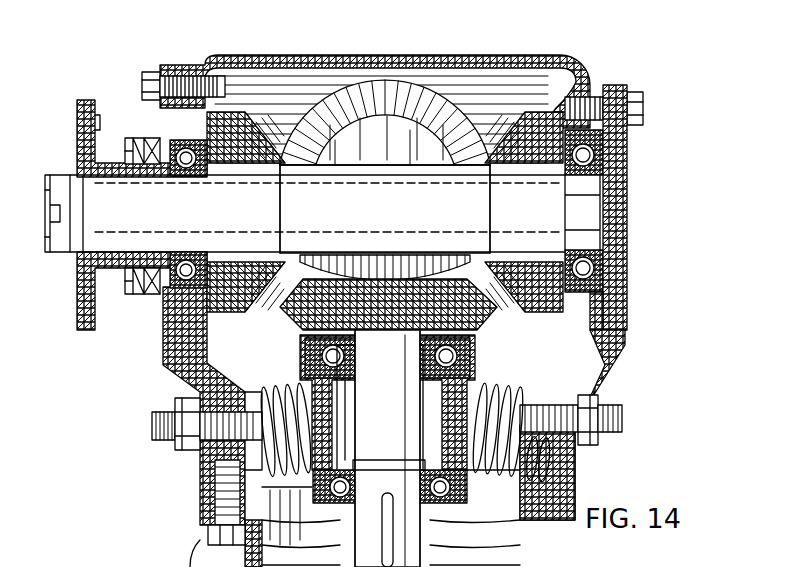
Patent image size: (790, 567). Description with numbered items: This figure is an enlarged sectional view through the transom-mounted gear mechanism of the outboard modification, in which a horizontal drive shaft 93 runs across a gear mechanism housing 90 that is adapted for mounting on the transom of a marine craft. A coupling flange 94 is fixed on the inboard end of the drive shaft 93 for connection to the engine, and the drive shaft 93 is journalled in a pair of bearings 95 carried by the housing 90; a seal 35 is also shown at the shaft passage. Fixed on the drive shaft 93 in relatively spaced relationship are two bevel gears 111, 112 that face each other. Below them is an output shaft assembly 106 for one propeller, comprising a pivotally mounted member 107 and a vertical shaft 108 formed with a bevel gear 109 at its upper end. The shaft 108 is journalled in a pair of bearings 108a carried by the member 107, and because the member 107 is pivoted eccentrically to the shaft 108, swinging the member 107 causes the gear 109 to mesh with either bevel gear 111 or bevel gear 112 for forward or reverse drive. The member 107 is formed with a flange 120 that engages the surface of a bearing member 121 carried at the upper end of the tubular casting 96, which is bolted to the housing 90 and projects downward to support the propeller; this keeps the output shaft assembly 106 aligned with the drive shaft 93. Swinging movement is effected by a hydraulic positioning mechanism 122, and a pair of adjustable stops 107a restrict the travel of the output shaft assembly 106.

The gear mechanism housing 90 is at (552, 52).
The drive shaft 93 is at (628, 193).
The coupling flange 94 is at (80, 150).
The bearings 95 is at (600, 263).
The seal 35 is at (160, 292).
The bevel gear 111 is at (252, 318).
The bevel gear 112 is at (527, 307).
The bevel gear 109 is at (298, 326).
The pivotally mounted member 107 is at (472, 356).
The adjustable stops 107a is at (195, 392).
The shaft 108 is at (415, 527).
The bearings 108a is at (302, 352).
The output shaft assembly 106 is at (598, 356).
The flange 120 is at (338, 428).
The bearing member 121 is at (215, 505).
The hydraulic positioning mechanism 122 is at (567, 470).
The tubular casting 96 is at (520, 530).